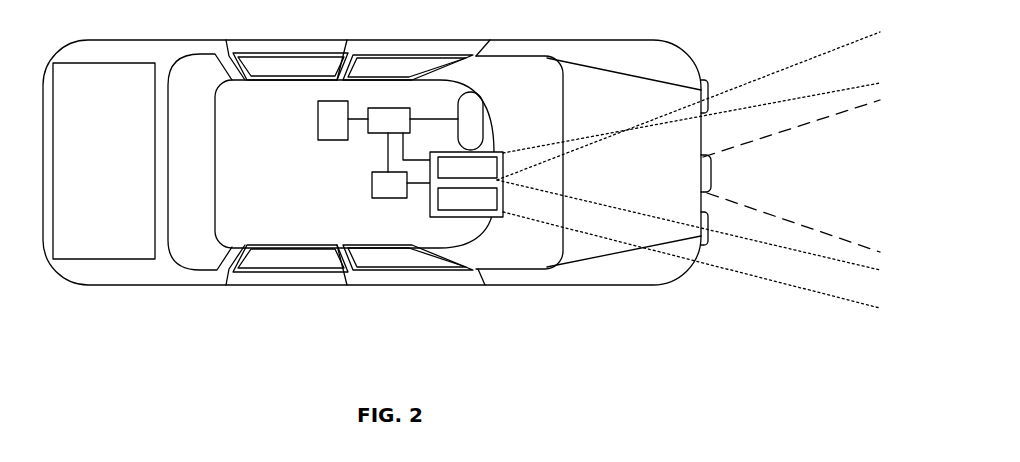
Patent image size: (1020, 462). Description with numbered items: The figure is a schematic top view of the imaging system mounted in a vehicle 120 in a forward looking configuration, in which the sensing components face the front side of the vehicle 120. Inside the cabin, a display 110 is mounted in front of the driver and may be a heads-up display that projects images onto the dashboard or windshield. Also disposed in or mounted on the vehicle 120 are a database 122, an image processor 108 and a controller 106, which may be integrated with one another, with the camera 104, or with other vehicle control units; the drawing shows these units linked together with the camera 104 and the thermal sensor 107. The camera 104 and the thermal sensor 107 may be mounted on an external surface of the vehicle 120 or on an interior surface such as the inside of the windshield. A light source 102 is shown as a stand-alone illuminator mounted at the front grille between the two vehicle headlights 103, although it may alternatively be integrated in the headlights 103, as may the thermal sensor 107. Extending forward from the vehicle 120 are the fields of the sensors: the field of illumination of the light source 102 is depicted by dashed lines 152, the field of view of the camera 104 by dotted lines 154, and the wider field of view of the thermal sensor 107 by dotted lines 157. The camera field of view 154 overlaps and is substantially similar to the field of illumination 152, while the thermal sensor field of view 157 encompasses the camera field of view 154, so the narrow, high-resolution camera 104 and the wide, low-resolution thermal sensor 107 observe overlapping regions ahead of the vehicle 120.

The vehicle 120 is at (132, 40).
The database 122 is at (318, 118).
The image processor 108 is at (372, 107).
The controller 106 is at (372, 176).
The display 110 is at (458, 108).
The camera 104 is at (494, 153).
The thermal sensor 107 is at (497, 215).
The light source 102 is at (712, 178).
The vehicle headlights 103 is at (708, 83).
The field of view of thermal sensor 157 is at (823, 52).
The field of view of camera 154 is at (863, 86).
The field of illumination of light source 152 is at (807, 125).